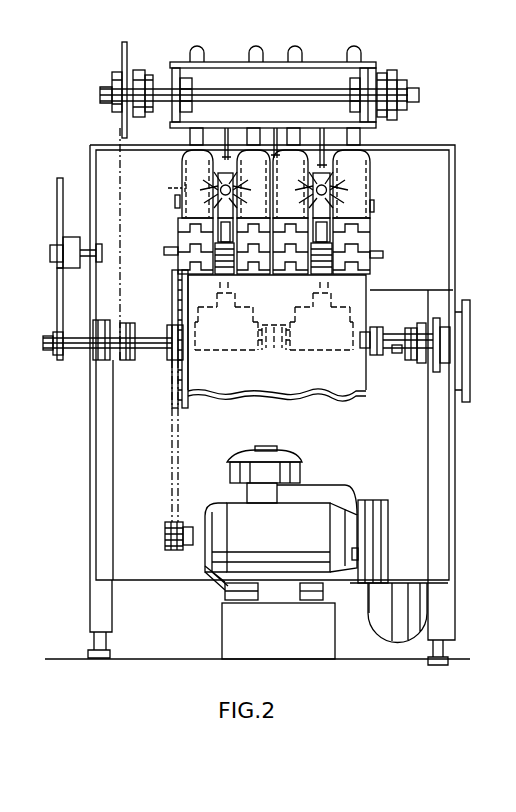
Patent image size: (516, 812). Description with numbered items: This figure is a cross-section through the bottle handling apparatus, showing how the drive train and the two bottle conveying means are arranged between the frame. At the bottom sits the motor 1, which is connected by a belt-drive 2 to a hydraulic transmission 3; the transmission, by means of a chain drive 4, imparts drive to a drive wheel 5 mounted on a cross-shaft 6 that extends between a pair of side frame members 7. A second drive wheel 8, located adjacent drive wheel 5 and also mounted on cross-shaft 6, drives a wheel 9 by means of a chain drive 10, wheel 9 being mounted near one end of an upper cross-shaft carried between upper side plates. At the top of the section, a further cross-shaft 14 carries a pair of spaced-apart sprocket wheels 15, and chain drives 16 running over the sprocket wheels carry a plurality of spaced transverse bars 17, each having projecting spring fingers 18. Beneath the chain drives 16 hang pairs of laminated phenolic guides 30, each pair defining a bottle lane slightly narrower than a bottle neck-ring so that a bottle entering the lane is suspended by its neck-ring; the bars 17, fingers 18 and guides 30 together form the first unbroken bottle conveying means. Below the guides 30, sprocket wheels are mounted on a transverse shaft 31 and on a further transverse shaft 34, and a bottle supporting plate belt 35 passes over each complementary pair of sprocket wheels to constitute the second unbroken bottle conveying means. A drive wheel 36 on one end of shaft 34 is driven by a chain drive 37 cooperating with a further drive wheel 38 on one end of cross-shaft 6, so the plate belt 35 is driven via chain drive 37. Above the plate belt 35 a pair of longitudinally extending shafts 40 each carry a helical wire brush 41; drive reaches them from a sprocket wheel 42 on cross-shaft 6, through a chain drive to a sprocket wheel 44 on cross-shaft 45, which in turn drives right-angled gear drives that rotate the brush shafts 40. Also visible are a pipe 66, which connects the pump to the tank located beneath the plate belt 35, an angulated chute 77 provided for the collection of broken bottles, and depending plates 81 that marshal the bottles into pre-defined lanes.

The motor 1 is at (288, 548).
The belt-drive 2 is at (370, 628).
The hydraulic transmission 3 is at (346, 494).
The chain drive 4 is at (172, 470).
The drive wheel 5 is at (173, 376).
The cross-shaft 6 is at (160, 338).
The side frame members 7 is at (452, 278).
The drive wheel 8 is at (121, 333).
The wheel 9 is at (122, 48).
The chain drive 10 is at (122, 177).
The cross-shaft 14 is at (274, 92).
The sprocket wheels 15 is at (192, 80).
The chain drives 16 is at (372, 78).
The transverse bars 17 is at (296, 52).
The spring fingers 18 is at (256, 50).
The laminated phenolic guides 30 is at (335, 155).
The transverse shaft 31 is at (166, 250).
The transverse shaft 34 is at (118, 246).
The bottle supporting plate belt 35 is at (371, 223).
The drive wheel 36 is at (58, 208).
The chain drive 37 is at (58, 297).
The drive wheel 38 is at (50, 346).
The longitudinally extending shafts 40 is at (175, 190).
The helical wire brush 41 is at (345, 192).
The sprocket wheel 42 is at (417, 366).
The sprocket wheel 44 is at (416, 327).
The cross-shaft 45 is at (426, 330).
The pipe 66 is at (369, 614).
The angulated chute 77 is at (294, 390).
The depending plates 81 is at (374, 206).